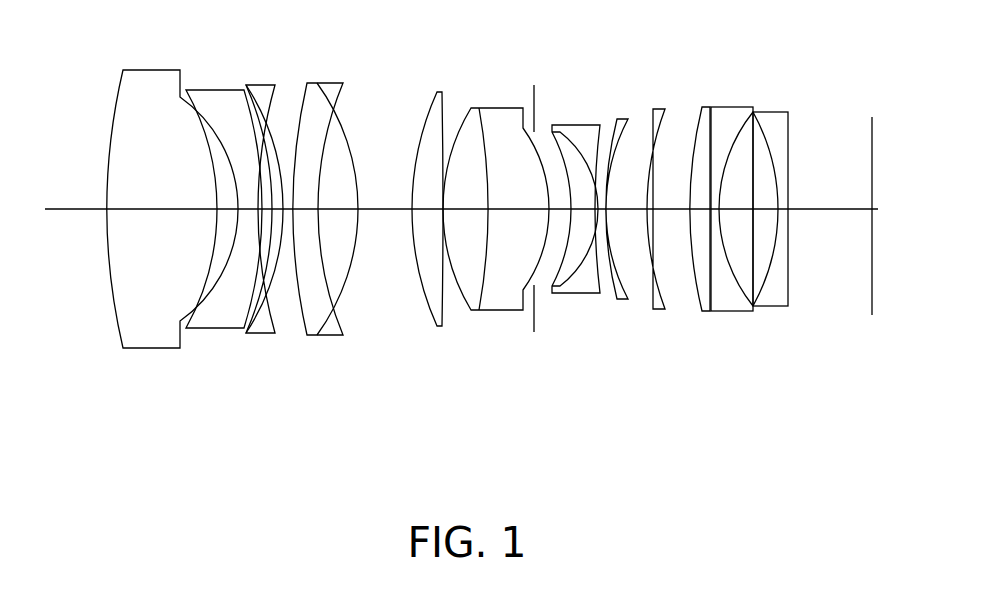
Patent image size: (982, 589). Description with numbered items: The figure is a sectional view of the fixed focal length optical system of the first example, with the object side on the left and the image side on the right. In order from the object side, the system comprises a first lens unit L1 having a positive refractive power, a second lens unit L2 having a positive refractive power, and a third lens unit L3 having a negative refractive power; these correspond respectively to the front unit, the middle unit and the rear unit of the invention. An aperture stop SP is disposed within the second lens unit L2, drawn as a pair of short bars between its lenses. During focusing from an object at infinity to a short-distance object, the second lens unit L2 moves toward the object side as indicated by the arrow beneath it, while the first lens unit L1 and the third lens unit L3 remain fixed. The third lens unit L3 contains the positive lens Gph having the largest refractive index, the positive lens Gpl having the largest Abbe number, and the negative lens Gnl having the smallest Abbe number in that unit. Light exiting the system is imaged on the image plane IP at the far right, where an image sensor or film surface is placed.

The first lens unit L1 is at (111, 363).
The second lens unit L2 is at (413, 327).
The third lens unit L3 is at (739, 225).
The aperture stop SP is at (522, 97).
The image plane IP is at (868, 107).
The positive lens having the largest refractive index Gph is at (708, 136).
The positive lens having the largest Abbe number Gpl is at (765, 135).
The negative lens having the smallest Abbe number Gnl is at (780, 135).